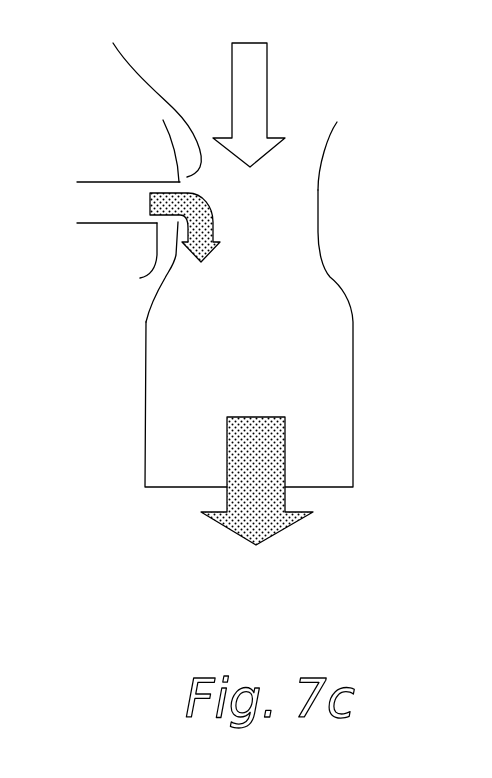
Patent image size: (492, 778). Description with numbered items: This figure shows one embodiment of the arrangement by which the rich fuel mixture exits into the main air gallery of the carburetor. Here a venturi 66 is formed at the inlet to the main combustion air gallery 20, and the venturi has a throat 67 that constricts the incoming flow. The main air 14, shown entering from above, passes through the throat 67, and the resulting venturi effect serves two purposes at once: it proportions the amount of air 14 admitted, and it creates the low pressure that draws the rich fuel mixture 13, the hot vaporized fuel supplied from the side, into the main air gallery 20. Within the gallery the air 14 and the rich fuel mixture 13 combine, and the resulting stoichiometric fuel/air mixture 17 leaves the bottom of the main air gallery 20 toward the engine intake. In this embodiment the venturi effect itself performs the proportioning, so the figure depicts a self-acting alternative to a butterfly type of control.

The rich fuel mixture 13 is at (140, 278).
The main air 14 is at (252, 87).
The fuel/air mixture 17 is at (262, 522).
The main combustion air gallery 20 is at (353, 327).
The venturi 66 is at (318, 198).
The throat 67 is at (140, 105).